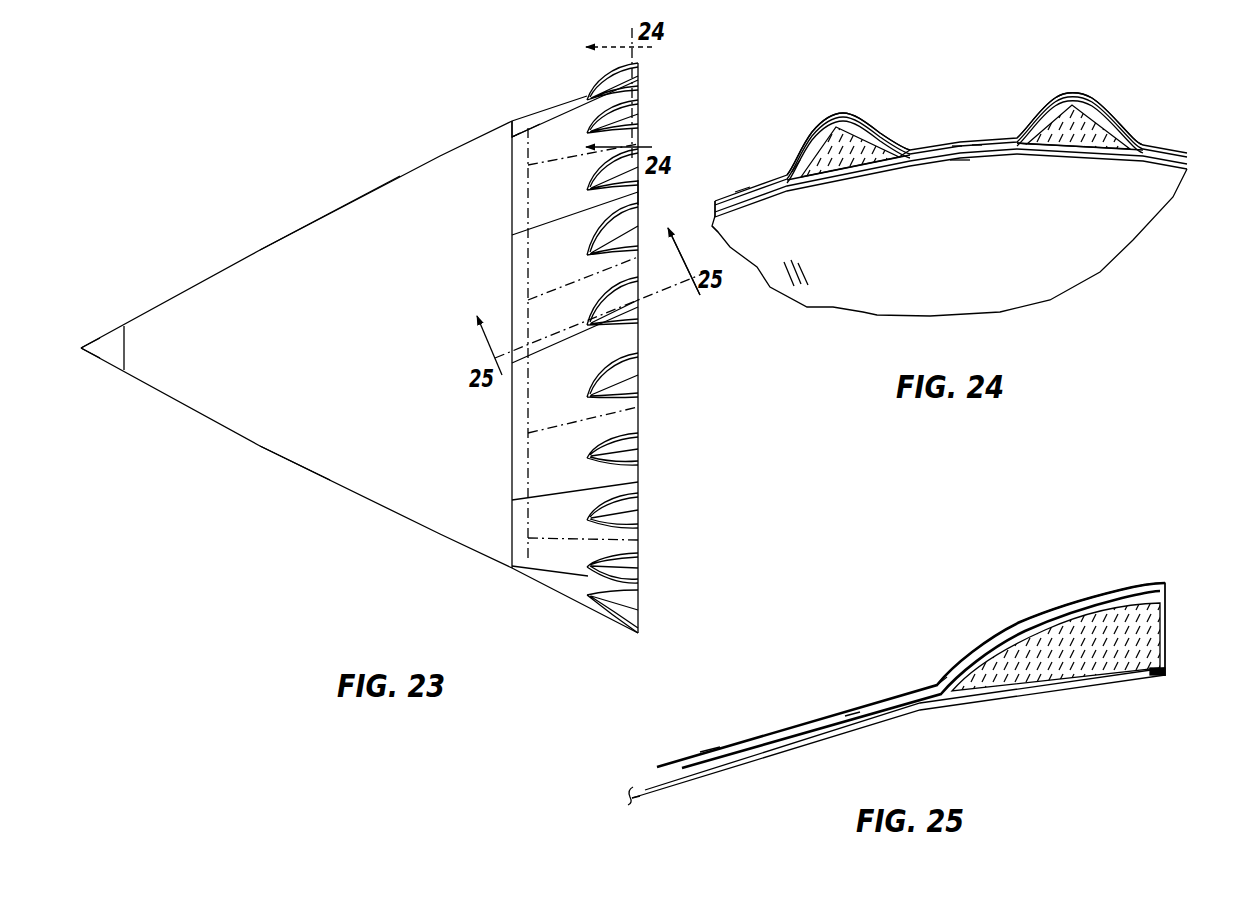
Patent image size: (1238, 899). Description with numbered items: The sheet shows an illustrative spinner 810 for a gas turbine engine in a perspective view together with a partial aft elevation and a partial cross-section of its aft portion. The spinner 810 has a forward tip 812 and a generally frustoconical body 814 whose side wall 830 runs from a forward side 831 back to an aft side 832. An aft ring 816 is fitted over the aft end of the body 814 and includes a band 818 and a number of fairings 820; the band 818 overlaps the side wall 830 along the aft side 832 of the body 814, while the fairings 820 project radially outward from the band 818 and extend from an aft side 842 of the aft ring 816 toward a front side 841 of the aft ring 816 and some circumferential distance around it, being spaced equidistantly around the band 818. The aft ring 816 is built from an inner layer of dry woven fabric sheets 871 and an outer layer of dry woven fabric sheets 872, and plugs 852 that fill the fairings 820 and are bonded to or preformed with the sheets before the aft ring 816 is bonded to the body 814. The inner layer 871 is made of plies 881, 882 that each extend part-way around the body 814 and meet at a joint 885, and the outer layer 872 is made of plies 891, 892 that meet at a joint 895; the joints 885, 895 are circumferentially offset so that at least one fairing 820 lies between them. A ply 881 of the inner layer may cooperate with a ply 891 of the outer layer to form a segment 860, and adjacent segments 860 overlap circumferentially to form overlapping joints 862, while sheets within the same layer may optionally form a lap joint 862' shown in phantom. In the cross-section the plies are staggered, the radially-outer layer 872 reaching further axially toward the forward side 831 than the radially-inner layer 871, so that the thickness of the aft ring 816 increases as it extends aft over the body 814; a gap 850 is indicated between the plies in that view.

In FIG. 23, the spinner 810 is at (175, 194).
In FIG. 23, the forward tip 812 is at (96, 370).
In FIG. 23, the body 814 is at (314, 220).
In FIG. 25, the body 814 is at (630, 790).
In FIG. 23, the aft ring 816 is at (649, 192).
In FIG. 24, the aft ring 816 is at (716, 196).
In FIG. 25, the aft ring 816 is at (938, 648).
In FIG. 23, the band 818 is at (566, 136).
In FIG. 25, the band 818 is at (854, 700).
In FIG. 23, the fairings 820 is at (645, 74).
In FIG. 24, the fairings 820 is at (845, 106).
In FIG. 25, the fairings 820 is at (1020, 612).
In FIG. 23, the side wall 830 is at (303, 410).
In FIG. 24, the side wall 830 is at (836, 284).
In FIG. 25, the side wall 830 is at (650, 789).
In FIG. 23, the forward side 831 is at (124, 360).
In FIG. 25, the aft side 832 is at (1166, 675).
In FIG. 23, the front side 841 is at (512, 492).
In FIG. 23, the aft side 842 is at (640, 405).
In FIG. 25, the aft side 842 is at (1168, 587).
In FIG. 25, the gap 850 is at (814, 712).
In FIG. 24, the plugs 852 is at (850, 160).
In FIG. 25, the plugs 852 is at (1071, 670).
In FIG. 23, the segment 860 is at (526, 128).
In FIG. 24, the segment 860 is at (812, 108).
In FIG. 24, the circumferentially overlapping joints 862 is at (942, 103).
In FIG. 24, the lap joint 862' is at (988, 103).
In FIG. 23, the inner layer of dry woven fabric sheets 871 is at (545, 120).
In FIG. 24, the inner layer of dry woven fabric sheets 871 is at (927, 168).
In FIG. 25, the inner layer of dry woven fabric sheets 871 is at (803, 741).
In FIG. 23, the outer layer of dry woven fabric sheets 872 is at (514, 118).
In FIG. 24, the outer layer of dry woven fabric sheets 872 is at (905, 142).
In FIG. 25, the outer layer of dry woven fabric sheets 872 is at (717, 749).
In FIG. 24, the ply 881 is at (903, 162).
In FIG. 24, the ply 882 is at (1022, 158).
In FIG. 23, the joint 885 is at (548, 174).
In FIG. 24, the joint 885 is at (960, 169).
In FIG. 23, the ply 891 is at (687, 253).
In FIG. 24, the ply 891 is at (695, 223).
In FIG. 24, the ply 892 is at (795, 161).
In FIG. 23, the joint 895 is at (546, 140).
In FIG. 24, the joint 895 is at (742, 186).